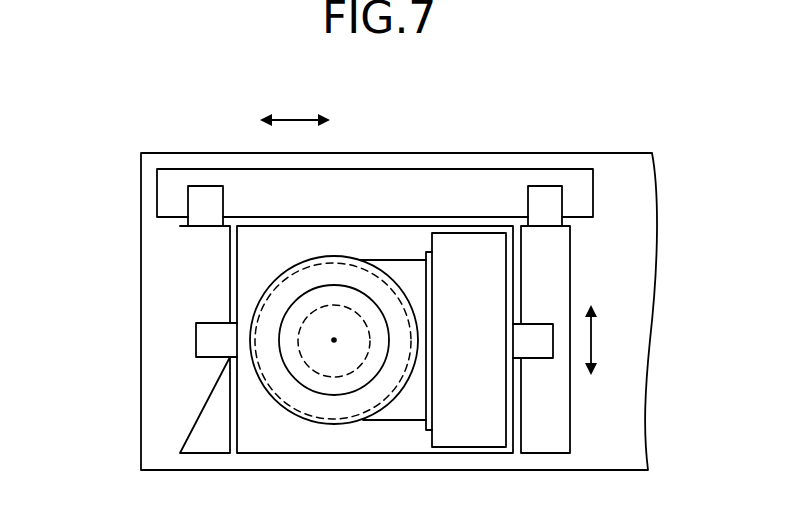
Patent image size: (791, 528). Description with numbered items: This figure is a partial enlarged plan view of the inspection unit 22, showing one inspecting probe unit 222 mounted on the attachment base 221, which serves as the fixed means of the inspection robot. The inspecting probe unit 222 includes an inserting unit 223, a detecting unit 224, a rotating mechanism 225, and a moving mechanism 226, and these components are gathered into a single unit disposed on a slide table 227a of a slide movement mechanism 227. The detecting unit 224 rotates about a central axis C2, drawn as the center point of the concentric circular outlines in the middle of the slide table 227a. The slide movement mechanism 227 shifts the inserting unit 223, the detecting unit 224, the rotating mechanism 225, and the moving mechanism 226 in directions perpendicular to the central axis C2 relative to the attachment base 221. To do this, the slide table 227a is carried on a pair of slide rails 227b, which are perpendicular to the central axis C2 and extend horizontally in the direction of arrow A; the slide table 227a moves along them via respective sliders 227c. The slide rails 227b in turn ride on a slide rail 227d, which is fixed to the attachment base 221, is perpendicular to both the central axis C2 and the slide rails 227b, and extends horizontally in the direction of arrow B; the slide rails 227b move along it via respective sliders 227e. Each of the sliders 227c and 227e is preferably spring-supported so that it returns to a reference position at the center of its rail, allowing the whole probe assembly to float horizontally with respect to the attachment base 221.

The inspection unit 22 is at (125, 223).
The attachment base 221 is at (637, 190).
The inspecting probe unit 222 is at (156, 297).
The inserting unit 223 is at (300, 368).
The detecting unit 224 is at (334, 407).
The rotating mechanism 225 is at (363, 358).
The moving mechanism 226 is at (407, 427).
The slide movement mechanism 227 is at (500, 162).
The slide table 227a is at (383, 240).
The slide rails 227b is at (208, 443).
The sliders 227c is at (210, 340).
The slide rail 227d is at (378, 183).
The sliders 227e is at (207, 192).
The central axis C2 is at (334, 338).